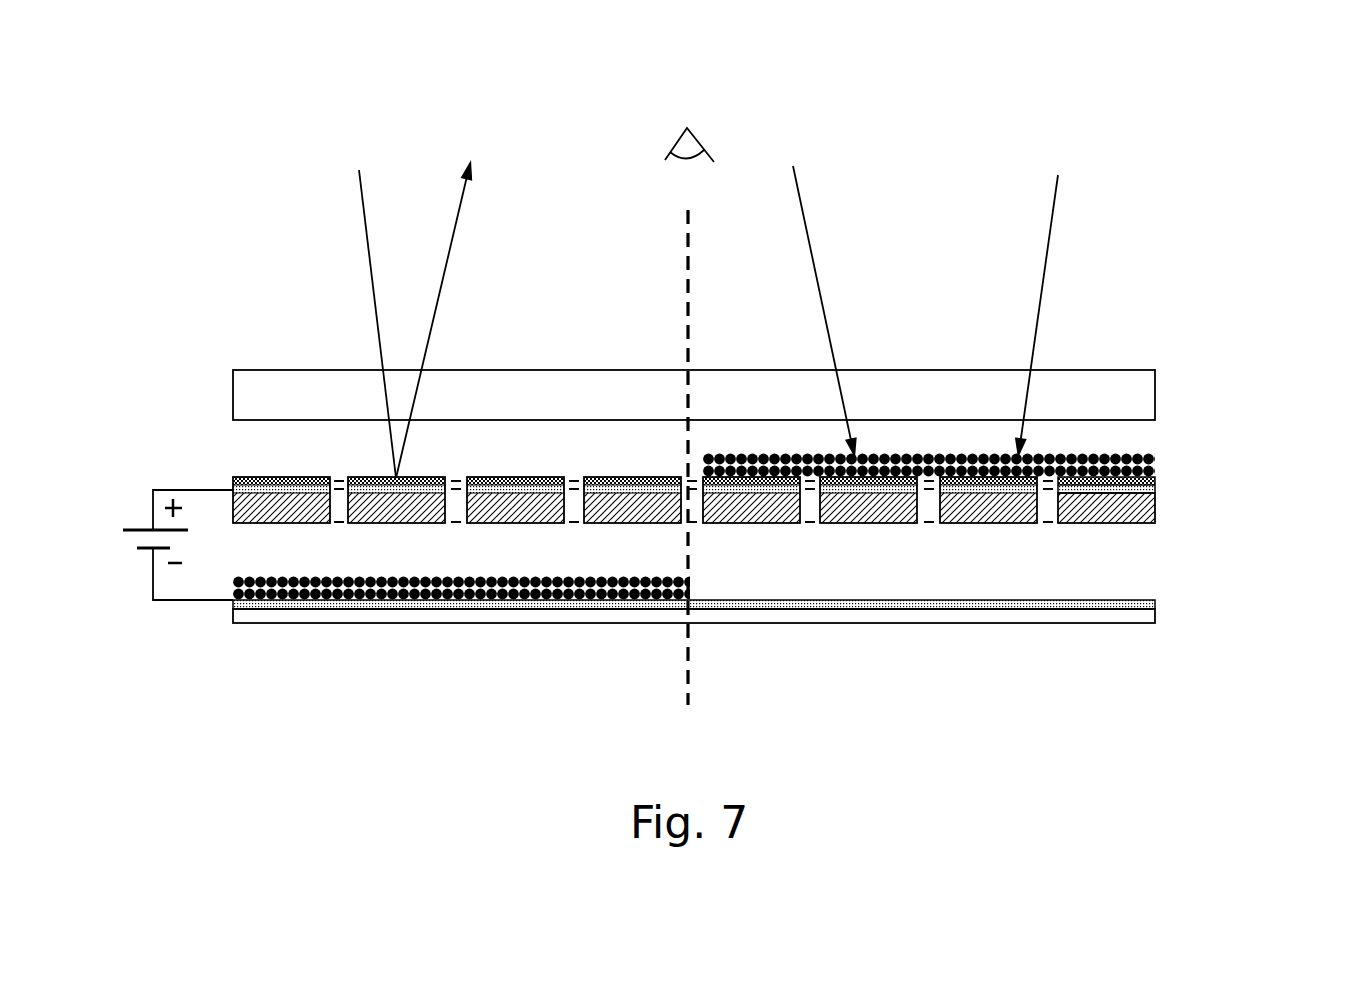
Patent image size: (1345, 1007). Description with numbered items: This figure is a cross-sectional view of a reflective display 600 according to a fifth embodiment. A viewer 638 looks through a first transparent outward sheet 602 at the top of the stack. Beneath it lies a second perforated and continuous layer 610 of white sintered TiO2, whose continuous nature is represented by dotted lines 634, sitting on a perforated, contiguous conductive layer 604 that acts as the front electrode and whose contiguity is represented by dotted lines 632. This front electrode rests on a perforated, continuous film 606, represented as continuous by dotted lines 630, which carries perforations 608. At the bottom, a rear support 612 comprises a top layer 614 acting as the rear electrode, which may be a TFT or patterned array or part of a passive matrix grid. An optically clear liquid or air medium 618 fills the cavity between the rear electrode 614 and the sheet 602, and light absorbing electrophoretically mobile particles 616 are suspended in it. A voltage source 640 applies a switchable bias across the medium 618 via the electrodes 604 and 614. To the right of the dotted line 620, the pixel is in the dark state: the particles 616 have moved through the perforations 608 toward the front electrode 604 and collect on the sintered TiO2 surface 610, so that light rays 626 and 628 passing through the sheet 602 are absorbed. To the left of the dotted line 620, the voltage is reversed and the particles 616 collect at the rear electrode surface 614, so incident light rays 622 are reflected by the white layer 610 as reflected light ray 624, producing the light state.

The display 600 is at (1102, 348).
The first transparent outward sheet 602 is at (232, 395).
The conductive layer 604 is at (1155, 492).
The film 606 is at (1155, 510).
The perforations 608 is at (1018, 546).
The second perforated and continuous layer 610 is at (252, 478).
The rear support 612 is at (882, 625).
The top layer 614 is at (1128, 603).
The electrophoretically mobile particles 616 is at (1150, 460).
The medium 618 is at (362, 459).
The dotted line 620 is at (683, 252).
The incident light rays 622 is at (362, 205).
The reflected light ray 624 is at (452, 228).
The light rays 626 is at (800, 210).
The light rays 628 is at (1050, 220).
The dotted lines 630 is at (337, 525).
The dotted lines 632 is at (460, 477).
The dotted lines 634 is at (577, 477).
The viewer 638 is at (707, 150).
The voltage source 640 is at (140, 575).